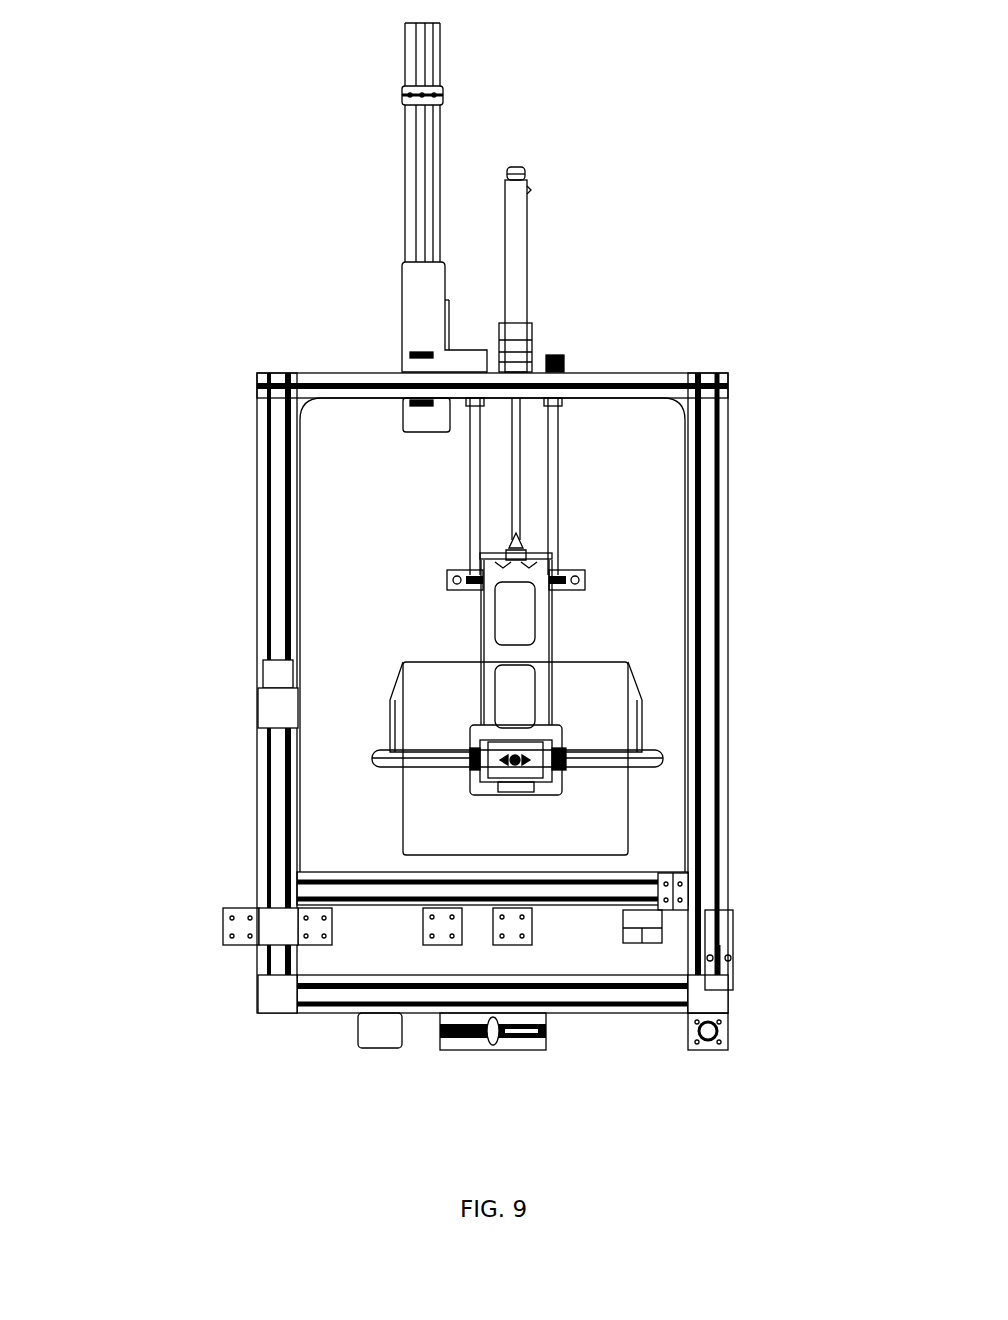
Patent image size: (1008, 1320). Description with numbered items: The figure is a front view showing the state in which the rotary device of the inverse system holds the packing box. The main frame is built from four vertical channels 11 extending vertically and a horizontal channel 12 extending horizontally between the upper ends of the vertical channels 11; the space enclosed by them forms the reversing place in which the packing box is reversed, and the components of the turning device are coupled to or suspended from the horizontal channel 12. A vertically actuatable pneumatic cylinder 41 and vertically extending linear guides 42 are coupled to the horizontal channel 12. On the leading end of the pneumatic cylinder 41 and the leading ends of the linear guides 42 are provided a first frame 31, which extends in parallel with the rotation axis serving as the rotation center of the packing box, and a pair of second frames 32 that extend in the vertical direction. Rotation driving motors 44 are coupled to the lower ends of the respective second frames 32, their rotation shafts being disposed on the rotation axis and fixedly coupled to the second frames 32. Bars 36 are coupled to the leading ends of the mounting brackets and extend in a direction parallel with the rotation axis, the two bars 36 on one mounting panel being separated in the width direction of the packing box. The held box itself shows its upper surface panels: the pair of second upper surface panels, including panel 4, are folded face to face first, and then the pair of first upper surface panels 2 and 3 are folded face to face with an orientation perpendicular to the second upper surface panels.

The first upper surface panel 2 is at (385, 722).
The first upper surface panel 3 is at (640, 698).
The second upper surface panel 4 is at (433, 697).
The vertical channel 11 is at (735, 508).
The horizontal channel 12 is at (650, 352).
The first frame 31 is at (430, 575).
The second frame 32 is at (495, 650).
The bar 36 is at (597, 762).
The pneumatic cylinder 41 is at (538, 262).
The linear guide 42 is at (437, 475).
The rotation driving motor 44 is at (352, 853).